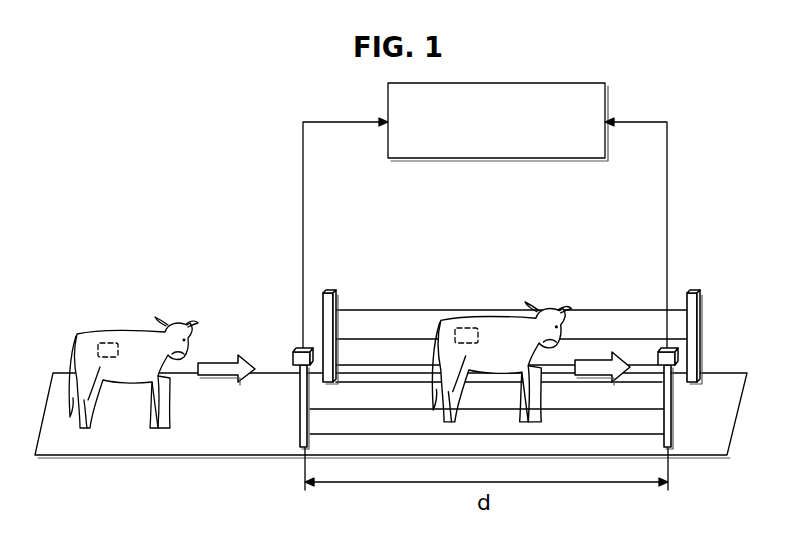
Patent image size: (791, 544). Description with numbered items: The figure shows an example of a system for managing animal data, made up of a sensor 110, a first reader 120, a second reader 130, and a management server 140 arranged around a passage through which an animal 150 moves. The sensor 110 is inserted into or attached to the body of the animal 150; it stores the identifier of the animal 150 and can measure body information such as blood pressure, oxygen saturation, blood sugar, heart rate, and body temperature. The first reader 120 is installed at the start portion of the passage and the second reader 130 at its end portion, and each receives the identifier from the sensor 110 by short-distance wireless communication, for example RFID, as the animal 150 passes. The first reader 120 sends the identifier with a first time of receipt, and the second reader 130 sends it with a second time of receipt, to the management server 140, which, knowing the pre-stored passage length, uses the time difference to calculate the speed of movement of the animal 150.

The sensor 110 is at (452, 327).
The first reader 120 is at (292, 350).
The second reader 130 is at (680, 357).
The management server 140 is at (498, 122).
The animal 150 is at (550, 307).